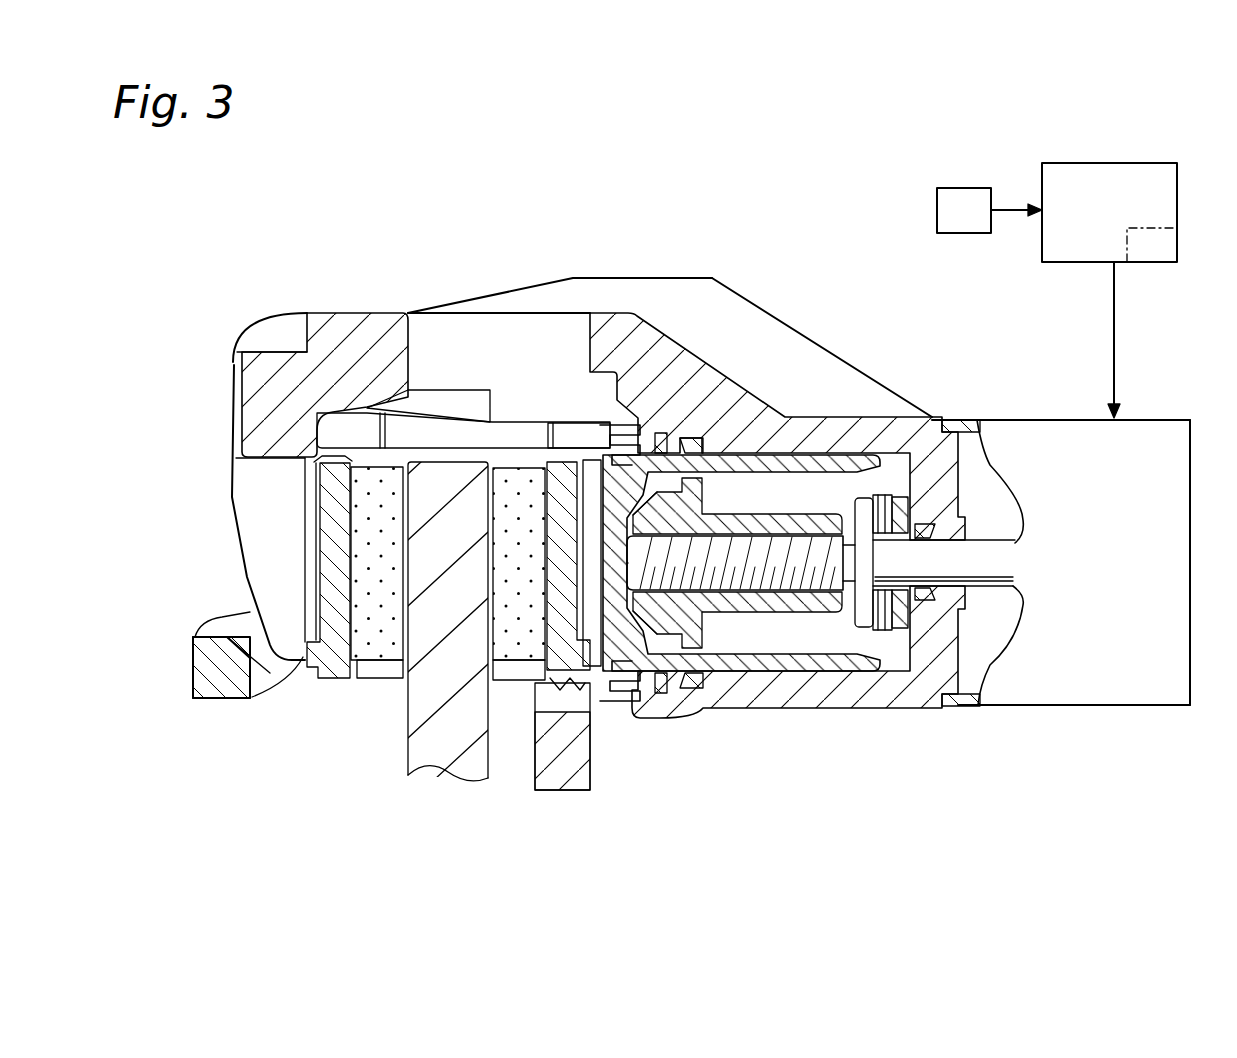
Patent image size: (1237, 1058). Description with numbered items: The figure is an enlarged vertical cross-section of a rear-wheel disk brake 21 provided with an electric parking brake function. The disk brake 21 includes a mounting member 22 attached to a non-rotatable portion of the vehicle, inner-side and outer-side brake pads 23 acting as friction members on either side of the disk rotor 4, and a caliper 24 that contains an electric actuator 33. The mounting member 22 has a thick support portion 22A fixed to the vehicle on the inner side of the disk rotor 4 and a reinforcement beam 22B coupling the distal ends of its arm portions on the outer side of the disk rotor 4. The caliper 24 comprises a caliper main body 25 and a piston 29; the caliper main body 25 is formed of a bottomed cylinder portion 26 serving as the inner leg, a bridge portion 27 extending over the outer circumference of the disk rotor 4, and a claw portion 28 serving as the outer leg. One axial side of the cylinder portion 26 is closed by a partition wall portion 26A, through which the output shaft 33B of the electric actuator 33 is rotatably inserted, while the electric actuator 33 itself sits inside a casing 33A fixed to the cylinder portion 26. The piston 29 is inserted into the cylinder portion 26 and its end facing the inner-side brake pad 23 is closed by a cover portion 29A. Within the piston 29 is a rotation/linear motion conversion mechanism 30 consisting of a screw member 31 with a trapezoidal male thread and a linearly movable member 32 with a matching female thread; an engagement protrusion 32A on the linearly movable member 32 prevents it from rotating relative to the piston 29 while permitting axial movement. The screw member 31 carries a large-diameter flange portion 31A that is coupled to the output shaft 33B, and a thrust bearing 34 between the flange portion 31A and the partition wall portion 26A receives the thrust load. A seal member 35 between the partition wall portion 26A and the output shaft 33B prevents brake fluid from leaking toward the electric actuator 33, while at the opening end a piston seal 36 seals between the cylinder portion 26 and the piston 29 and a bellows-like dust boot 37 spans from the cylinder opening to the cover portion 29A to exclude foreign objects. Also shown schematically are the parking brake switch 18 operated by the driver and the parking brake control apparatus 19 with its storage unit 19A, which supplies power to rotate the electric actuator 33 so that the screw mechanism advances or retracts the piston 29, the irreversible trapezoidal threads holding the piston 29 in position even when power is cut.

The disk rotor 4 is at (435, 700).
The parking brake switch 18 is at (937, 212).
The parking brake control apparatus 19 is at (1157, 200).
The storage unit 19A is at (1160, 247).
The disk brake 21 is at (640, 272).
The mounting member 22 is at (218, 712).
The support portion 22A is at (566, 760).
The reinforcement beam 22B is at (237, 676).
The brake pads 23 is at (357, 567).
The caliper 24 is at (326, 302).
The caliper main body 25 is at (748, 323).
The cylinder portion 26 is at (826, 455).
The partition wall portion 26A is at (920, 487).
The bridge portion 27 is at (482, 312).
The claw portion 28 is at (263, 527).
The piston 29 is at (797, 455).
The cover portion 29A is at (598, 505).
The rotation/linear motion conversion mechanism 30 is at (758, 496).
The screw member 31 is at (748, 577).
The flange portion 31A is at (866, 592).
The linearly movable member 32 is at (798, 603).
The engagement protrusion 32A is at (712, 675).
The electric actuator 33 is at (1130, 716).
The casing 33A is at (1153, 437).
The output shaft 33B is at (985, 553).
The thrust bearing 34 is at (885, 600).
The seal member 35 is at (922, 600).
The piston seal 36 is at (689, 450).
The dust boot 37 is at (620, 708).